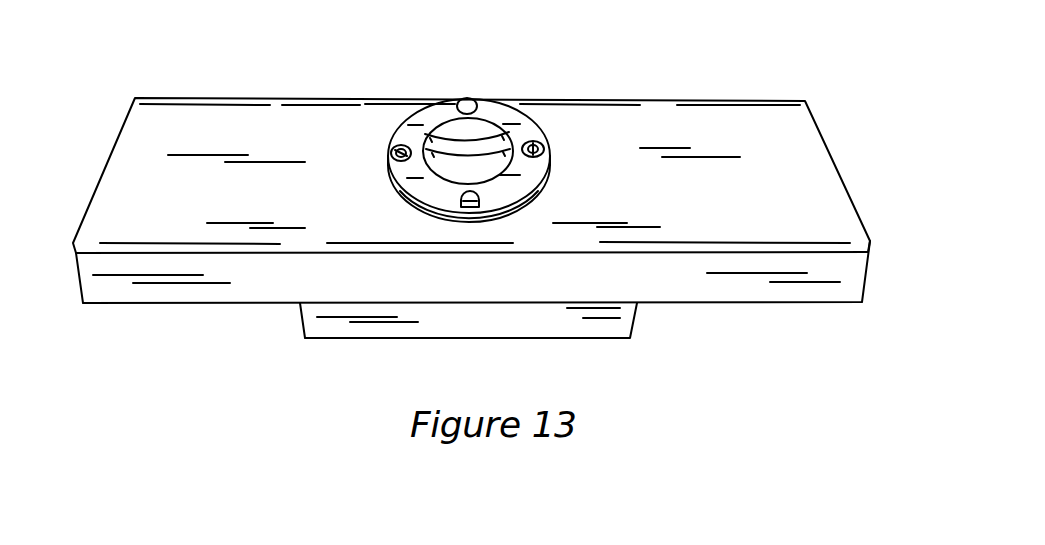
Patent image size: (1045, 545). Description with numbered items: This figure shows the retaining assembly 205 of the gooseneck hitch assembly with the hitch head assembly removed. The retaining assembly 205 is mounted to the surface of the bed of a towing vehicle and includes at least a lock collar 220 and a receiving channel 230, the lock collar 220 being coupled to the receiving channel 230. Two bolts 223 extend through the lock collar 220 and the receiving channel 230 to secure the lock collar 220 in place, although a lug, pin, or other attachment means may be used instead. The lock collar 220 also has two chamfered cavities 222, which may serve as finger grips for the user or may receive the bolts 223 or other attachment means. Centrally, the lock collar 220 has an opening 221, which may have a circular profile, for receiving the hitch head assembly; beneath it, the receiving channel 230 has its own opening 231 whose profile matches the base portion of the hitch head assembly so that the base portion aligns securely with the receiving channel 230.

The retaining assembly 205 is at (408, 120).
The lock collar 220 is at (527, 173).
The opening 221 is at (500, 190).
The cavity 222 is at (468, 100).
The bolt 223 is at (540, 147).
The receiving channel 230 is at (453, 173).
The opening 231 is at (448, 123).